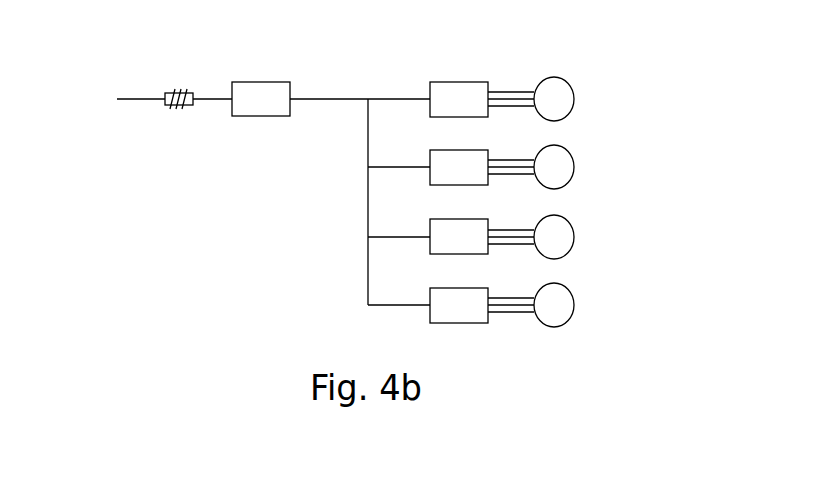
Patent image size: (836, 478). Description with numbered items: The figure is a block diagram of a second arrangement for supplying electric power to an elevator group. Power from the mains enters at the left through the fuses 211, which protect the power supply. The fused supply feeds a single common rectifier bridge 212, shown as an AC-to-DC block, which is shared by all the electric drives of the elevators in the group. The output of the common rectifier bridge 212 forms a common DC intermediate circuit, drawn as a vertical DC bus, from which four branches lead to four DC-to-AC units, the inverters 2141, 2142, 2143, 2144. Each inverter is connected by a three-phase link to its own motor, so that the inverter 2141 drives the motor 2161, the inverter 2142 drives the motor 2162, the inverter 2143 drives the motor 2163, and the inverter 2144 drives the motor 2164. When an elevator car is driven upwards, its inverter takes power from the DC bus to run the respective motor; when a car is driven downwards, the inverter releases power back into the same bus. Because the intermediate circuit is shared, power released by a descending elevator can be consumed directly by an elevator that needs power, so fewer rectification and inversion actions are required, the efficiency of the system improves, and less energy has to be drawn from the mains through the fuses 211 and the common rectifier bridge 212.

The fuses 211 is at (171, 90).
The common rectifier bridge 212 is at (279, 82).
The inverter 2141 is at (476, 54).
The inverter 2142 is at (438, 185).
The inverter 2143 is at (438, 254).
The inverter 2144 is at (438, 323).
The motor 2161 is at (561, 79).
The motor 2162 is at (562, 147).
The motor 2163 is at (560, 217).
The motor 2164 is at (559, 285).